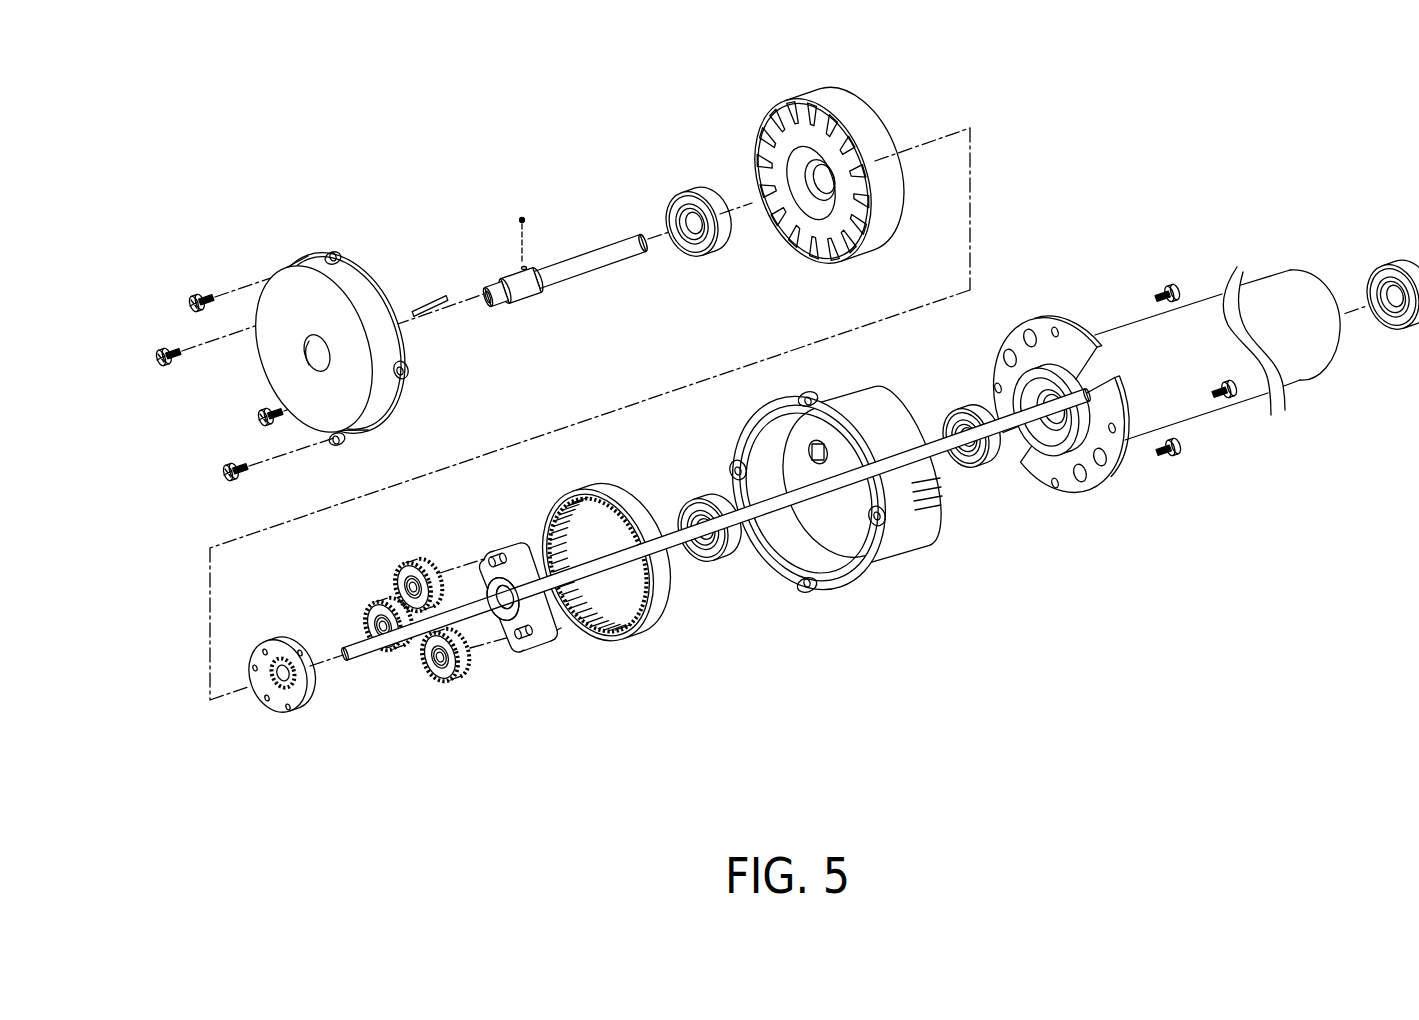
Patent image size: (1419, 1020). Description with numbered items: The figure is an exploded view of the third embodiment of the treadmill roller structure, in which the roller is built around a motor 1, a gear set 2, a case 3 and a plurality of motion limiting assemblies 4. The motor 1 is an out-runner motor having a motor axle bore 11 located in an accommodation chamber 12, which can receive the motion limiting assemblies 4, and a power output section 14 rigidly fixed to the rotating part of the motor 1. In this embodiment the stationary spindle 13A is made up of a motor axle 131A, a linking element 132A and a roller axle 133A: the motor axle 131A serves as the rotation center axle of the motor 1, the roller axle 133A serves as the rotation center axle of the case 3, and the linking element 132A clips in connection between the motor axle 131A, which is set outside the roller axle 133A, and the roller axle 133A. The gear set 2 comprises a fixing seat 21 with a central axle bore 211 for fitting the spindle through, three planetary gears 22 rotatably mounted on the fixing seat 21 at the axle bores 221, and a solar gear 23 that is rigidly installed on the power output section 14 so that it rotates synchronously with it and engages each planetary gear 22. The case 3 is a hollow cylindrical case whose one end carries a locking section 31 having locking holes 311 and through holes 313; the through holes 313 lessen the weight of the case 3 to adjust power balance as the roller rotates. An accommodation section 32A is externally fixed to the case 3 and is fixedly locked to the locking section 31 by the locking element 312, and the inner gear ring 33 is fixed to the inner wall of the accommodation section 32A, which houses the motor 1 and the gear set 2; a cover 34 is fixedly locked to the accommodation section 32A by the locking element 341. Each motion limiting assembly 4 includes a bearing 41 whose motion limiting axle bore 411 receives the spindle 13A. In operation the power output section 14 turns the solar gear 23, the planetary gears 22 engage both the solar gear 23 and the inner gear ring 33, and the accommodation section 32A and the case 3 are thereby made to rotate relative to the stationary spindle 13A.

The motor 1 is at (836, 160).
The motor axle bore 11 is at (808, 170).
The accommodation chamber 12 is at (800, 178).
The spindle 13A is at (564, 256).
The motor axle 131A is at (567, 270).
The linking element 132A is at (437, 307).
The roller axle 133A is at (605, 567).
The power output section 14 is at (278, 647).
The gear set 2 is at (424, 664).
The fixing seat 21 is at (508, 624).
The axle bore 211 is at (492, 562).
The planetary gears 22 is at (440, 690).
The axle bores 221 is at (530, 643).
The solar gear 23 is at (307, 707).
The case 3 is at (1167, 388).
The locking section 31 is at (1062, 412).
The locking holes 311 is at (1057, 485).
The locking element 312 is at (1177, 447).
The through holes 313 is at (1097, 457).
The accommodation section 32A is at (893, 537).
The inner gear ring 33 is at (633, 510).
The cover 34 is at (373, 277).
The locking element 341 is at (203, 297).
The motion limiting assemblies 4 is at (1037, 378).
The bearing 41 is at (717, 233).
The motion limiting axle bore 411 is at (693, 228).